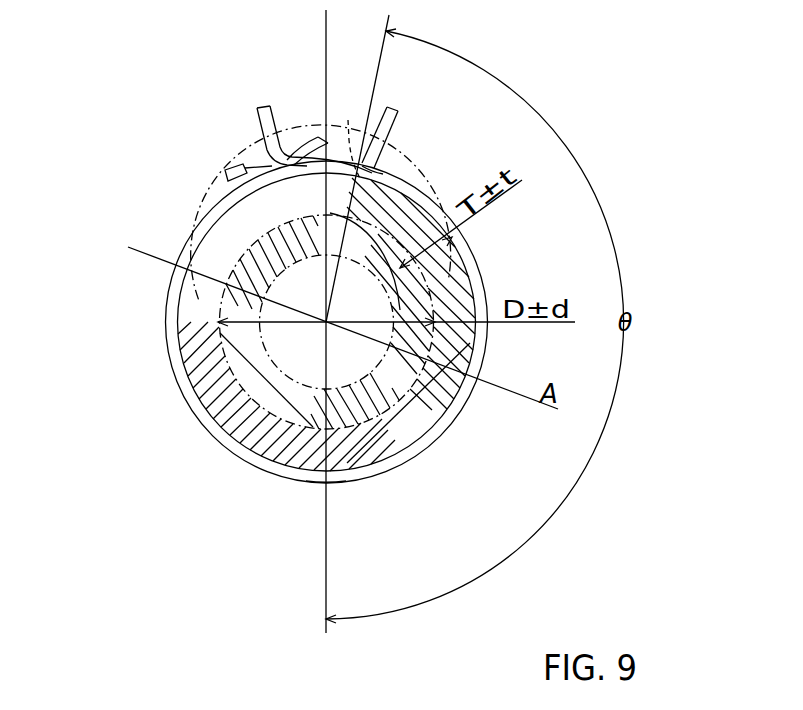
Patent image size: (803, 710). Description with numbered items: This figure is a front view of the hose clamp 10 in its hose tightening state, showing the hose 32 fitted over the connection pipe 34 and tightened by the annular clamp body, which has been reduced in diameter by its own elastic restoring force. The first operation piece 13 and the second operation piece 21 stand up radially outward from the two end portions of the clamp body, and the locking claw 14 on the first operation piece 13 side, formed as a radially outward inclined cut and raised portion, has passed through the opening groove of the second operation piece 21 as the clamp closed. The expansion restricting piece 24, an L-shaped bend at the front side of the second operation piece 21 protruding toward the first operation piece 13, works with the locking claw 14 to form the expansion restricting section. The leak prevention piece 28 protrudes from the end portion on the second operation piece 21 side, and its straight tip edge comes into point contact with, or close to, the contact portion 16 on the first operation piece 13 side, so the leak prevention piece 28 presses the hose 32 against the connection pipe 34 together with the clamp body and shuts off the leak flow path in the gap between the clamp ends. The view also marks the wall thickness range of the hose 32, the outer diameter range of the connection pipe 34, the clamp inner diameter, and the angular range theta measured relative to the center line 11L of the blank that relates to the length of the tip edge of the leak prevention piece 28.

The hose clamp 10 is at (502, 258).
The center line of the blank 11L is at (329, 487).
The first operation piece 13 is at (393, 117).
The locking claw 14 is at (318, 135).
The contact portion 16 is at (349, 136).
The second operation piece 21 is at (267, 107).
The expansion restricting piece 24 is at (233, 165).
The leak prevention piece 28 is at (378, 173).
The hose 32 is at (200, 313).
The connection pipe 34 is at (205, 410).